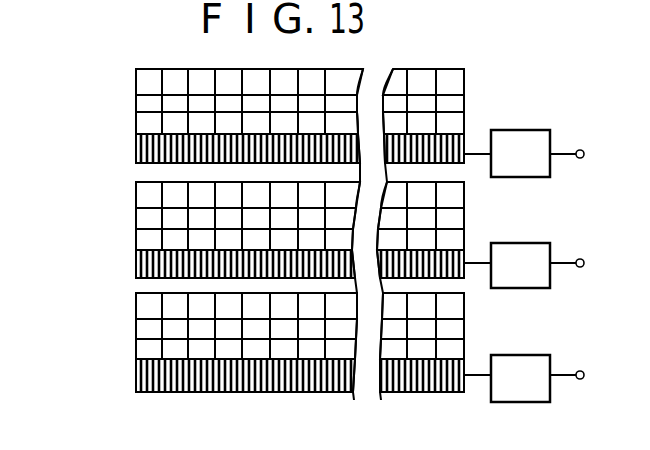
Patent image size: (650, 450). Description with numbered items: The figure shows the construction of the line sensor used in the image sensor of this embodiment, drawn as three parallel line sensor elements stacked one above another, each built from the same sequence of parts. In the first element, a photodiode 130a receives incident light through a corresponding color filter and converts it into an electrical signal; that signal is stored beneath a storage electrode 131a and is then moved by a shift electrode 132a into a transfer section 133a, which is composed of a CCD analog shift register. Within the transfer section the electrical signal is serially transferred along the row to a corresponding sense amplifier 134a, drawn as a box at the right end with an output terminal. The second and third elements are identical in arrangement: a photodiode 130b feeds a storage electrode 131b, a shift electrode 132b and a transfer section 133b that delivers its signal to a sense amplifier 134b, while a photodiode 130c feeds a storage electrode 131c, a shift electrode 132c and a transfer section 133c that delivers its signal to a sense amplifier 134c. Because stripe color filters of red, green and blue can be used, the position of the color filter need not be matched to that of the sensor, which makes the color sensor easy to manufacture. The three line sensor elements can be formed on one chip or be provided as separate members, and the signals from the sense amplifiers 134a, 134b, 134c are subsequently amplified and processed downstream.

The photodiode 130a is at (136, 84).
The storage electrode 131a is at (136, 106).
The shift electrode 132a is at (136, 127).
The transfer section 133a is at (136, 155).
The sense amplifier 134a is at (516, 130).
The photodiode 130b is at (136, 198).
The storage electrode 131b is at (136, 221).
The shift electrode 132b is at (136, 243).
The transfer section 133b is at (136, 268).
The sense amplifier 134b is at (521, 243).
The photodiode 130c is at (136, 310).
The storage electrode 131c is at (136, 333).
The shift electrode 132c is at (136, 352).
The transfer section 133c is at (136, 378).
The sense amplifier 134c is at (520, 355).